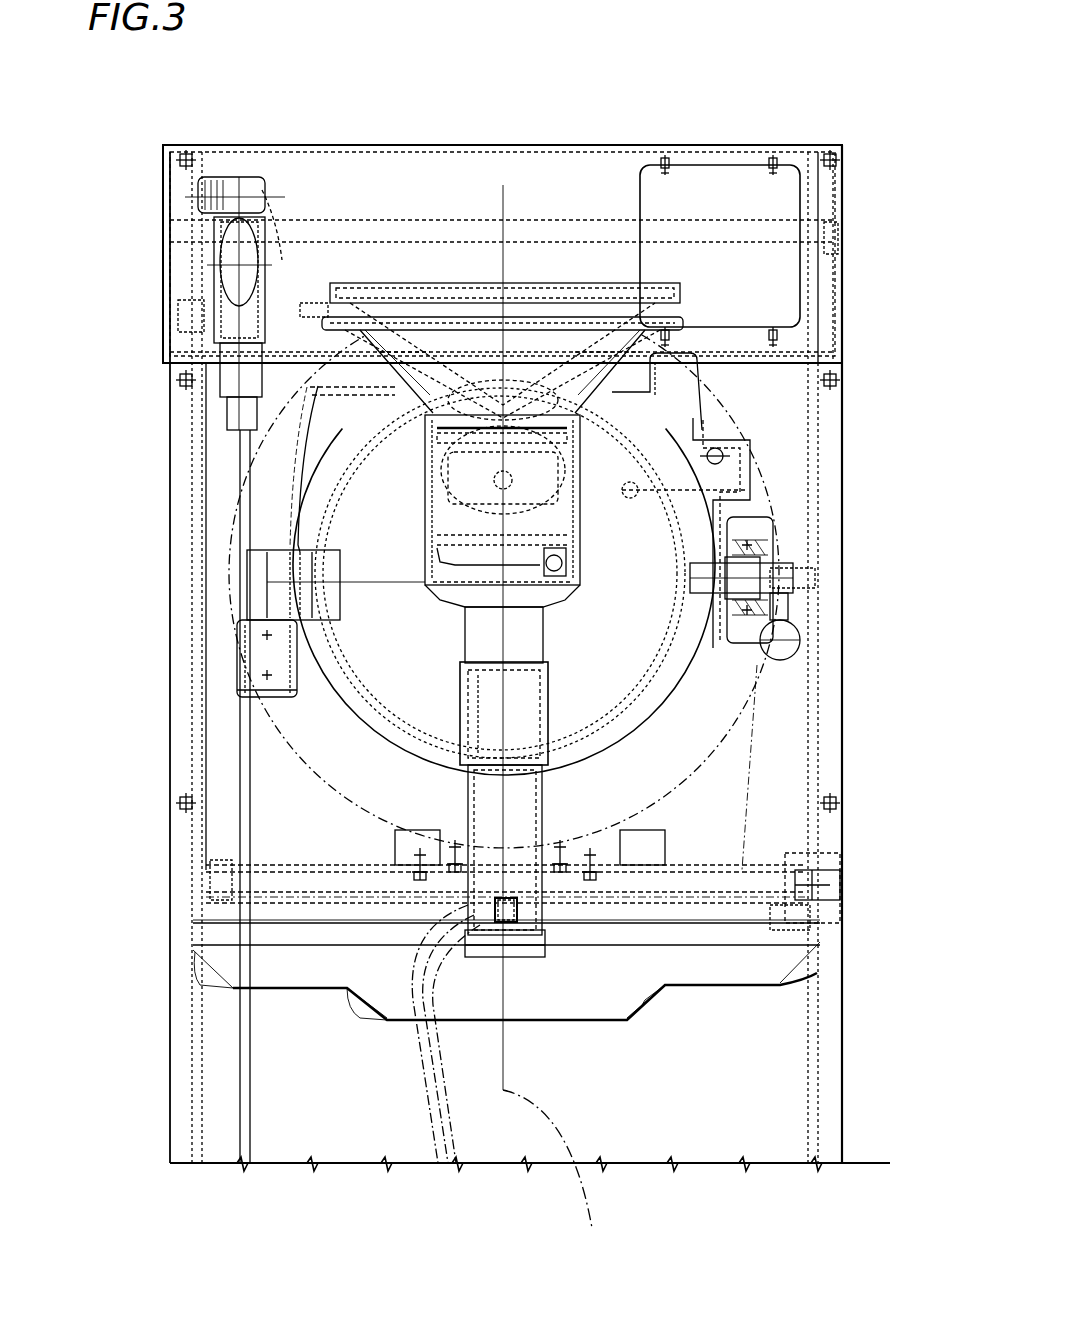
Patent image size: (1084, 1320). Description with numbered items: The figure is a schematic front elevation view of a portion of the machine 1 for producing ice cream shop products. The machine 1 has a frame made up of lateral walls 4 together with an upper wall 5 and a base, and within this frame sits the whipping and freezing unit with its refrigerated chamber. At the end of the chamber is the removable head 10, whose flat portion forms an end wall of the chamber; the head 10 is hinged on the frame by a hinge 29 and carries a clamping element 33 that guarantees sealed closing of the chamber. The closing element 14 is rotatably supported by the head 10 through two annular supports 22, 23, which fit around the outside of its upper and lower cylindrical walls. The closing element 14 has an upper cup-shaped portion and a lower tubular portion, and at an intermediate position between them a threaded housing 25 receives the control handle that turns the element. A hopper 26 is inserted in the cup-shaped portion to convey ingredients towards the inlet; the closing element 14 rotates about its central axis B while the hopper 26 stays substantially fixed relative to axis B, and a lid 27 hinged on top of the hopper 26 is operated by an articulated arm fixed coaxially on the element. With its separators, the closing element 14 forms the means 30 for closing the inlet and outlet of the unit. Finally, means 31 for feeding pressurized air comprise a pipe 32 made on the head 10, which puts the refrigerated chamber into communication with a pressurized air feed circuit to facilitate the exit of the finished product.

The machine 1 is at (566, 98).
The lateral walls 4 is at (170, 570).
The upper wall 5 is at (290, 145).
The removable head 10 is at (383, 688).
The closing element 14 is at (522, 638).
The annular support 22 is at (423, 500).
The annular support 23 is at (552, 742).
The housing 25 is at (562, 563).
The hopper 26 is at (378, 353).
The lid 27 is at (415, 290).
The hinge 29 is at (262, 608).
The means for closing the inlet and the outlet 30 is at (555, 620).
The means for feeding pressurized air 31 is at (678, 505).
The pipe 32 is at (665, 482).
The clamping element 33 is at (795, 598).
The central axis B is at (554, 1178).